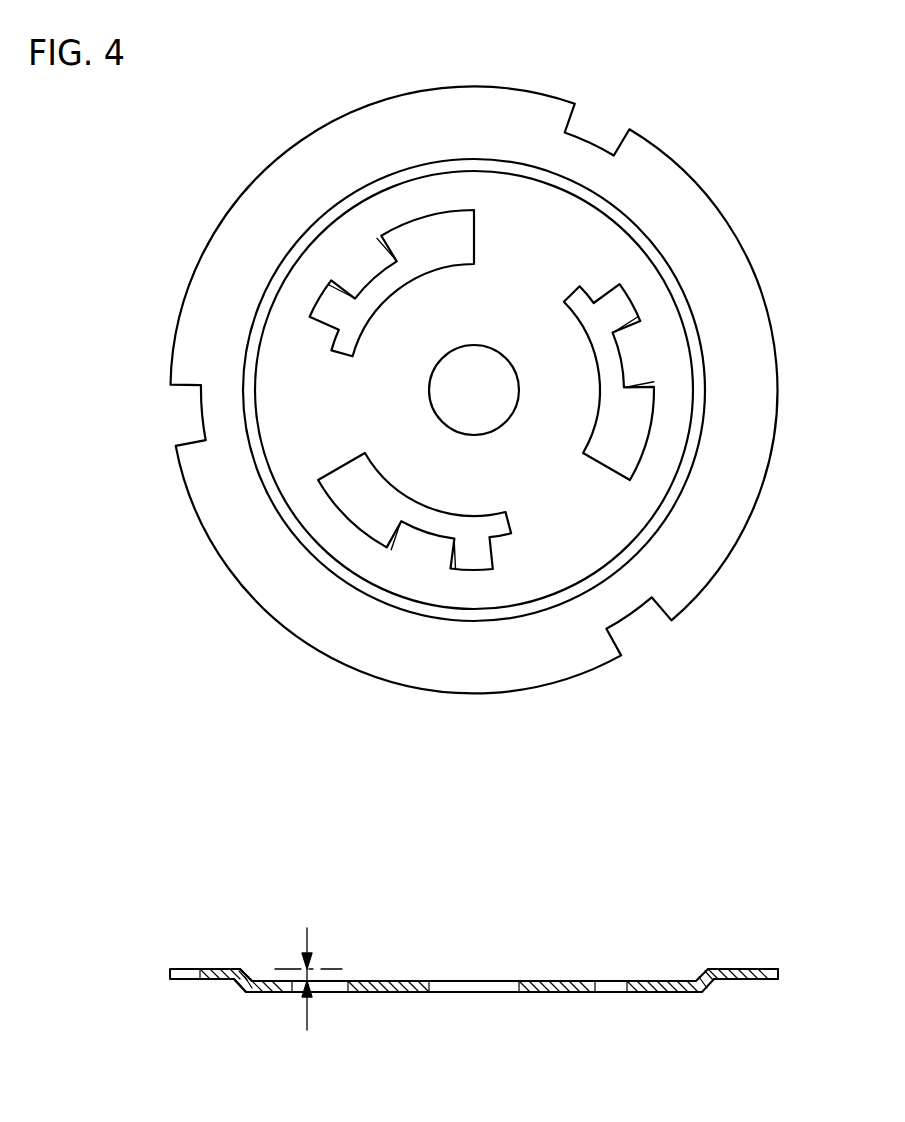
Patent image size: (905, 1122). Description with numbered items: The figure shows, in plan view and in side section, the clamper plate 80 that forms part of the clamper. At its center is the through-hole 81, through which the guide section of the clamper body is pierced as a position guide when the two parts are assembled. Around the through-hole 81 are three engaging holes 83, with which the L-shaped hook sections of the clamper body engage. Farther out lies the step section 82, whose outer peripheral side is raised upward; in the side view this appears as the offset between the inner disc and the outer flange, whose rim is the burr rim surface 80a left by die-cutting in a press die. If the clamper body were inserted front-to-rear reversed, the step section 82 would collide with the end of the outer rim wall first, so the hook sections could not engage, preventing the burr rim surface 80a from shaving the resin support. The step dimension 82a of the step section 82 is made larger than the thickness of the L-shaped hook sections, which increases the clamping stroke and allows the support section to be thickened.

The clamper plate 80 is at (665, 155).
The burr rim surface 80a is at (745, 968).
The through-hole 81 is at (478, 375).
The step section 82 is at (650, 527).
The step dimension 82a is at (340, 975).
The engaging hole 83 is at (622, 410).